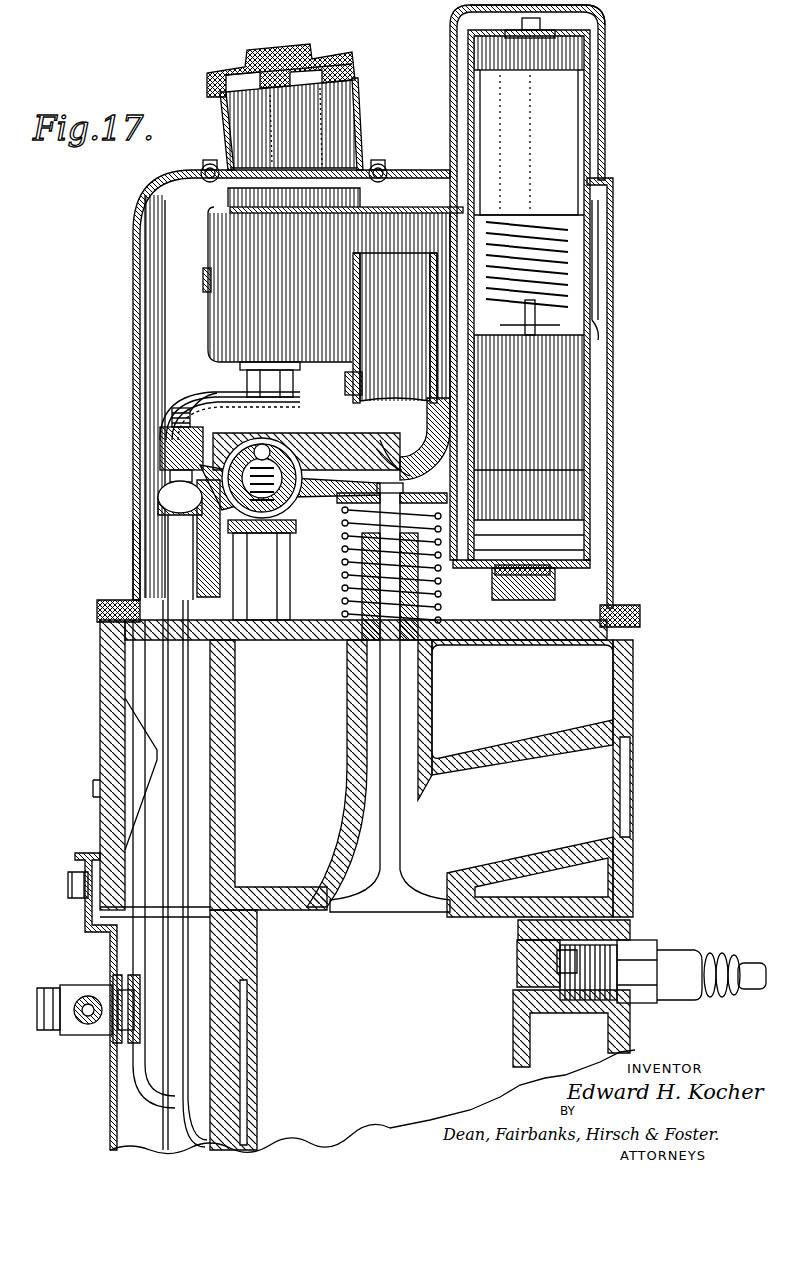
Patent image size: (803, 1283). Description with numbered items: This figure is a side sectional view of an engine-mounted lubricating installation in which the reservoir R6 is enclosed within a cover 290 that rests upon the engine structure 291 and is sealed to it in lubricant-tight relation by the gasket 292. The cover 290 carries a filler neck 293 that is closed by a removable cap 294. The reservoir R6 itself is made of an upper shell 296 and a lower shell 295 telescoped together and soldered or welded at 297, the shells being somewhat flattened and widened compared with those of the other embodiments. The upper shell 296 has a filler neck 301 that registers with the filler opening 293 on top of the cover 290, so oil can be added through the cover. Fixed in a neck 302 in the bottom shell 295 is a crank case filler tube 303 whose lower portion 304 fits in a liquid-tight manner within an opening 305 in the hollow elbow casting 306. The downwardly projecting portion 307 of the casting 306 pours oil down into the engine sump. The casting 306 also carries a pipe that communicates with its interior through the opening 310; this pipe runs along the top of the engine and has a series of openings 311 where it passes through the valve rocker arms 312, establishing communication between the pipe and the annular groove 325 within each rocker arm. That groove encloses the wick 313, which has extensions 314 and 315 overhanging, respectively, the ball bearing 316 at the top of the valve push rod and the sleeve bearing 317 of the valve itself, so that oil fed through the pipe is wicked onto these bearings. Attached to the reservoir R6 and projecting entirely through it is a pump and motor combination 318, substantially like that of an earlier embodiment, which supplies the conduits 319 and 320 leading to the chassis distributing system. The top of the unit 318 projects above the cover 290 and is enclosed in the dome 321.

The cover 290 is at (614, 347).
The engine structure 291 is at (630, 683).
The gasket 292 is at (640, 620).
The filler neck 293 is at (357, 110).
The removable cap 294 is at (345, 50).
The lower shell 295 is at (206, 313).
The upper shell 296 is at (210, 235).
The soldered or welded joint 297 is at (352, 274).
The filler neck 301 is at (226, 192).
The neck 302 is at (296, 358).
The crank case filler tube 303 is at (356, 256).
The lower portion of filler tube 304 is at (362, 379).
The opening 305 is at (445, 420).
The hollow elbow casting 306 is at (205, 392).
The downwardly projecting portion 307 is at (138, 553).
The opening 310 is at (290, 505).
The openings 311 is at (270, 518).
The valve rocker arms 312 is at (314, 433).
The wick 313 is at (198, 512).
The wick extension 314 is at (165, 450).
The wick extension 315 is at (352, 437).
The ball bearing 316 is at (160, 495).
The sleeve bearing 317 is at (400, 683).
The pump and motor combination 318 is at (588, 155).
The conduit 319 is at (200, 945).
The conduit 320 is at (70, 1022).
The dome 321 is at (590, 10).
The annular groove 325 is at (255, 445).
The reservoir R6 is at (608, 248).